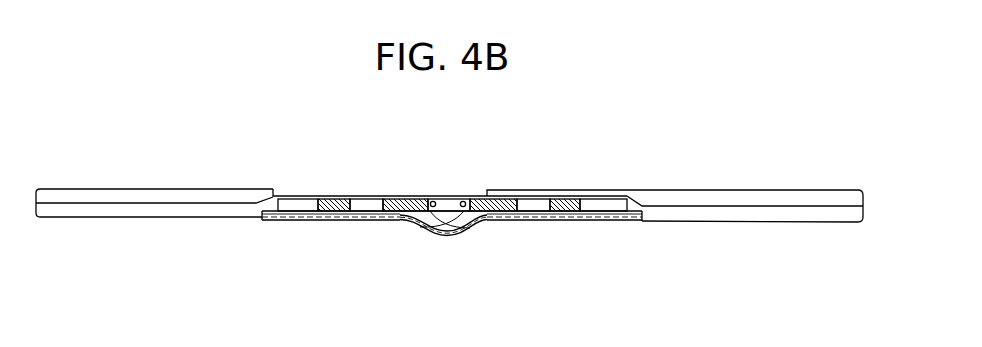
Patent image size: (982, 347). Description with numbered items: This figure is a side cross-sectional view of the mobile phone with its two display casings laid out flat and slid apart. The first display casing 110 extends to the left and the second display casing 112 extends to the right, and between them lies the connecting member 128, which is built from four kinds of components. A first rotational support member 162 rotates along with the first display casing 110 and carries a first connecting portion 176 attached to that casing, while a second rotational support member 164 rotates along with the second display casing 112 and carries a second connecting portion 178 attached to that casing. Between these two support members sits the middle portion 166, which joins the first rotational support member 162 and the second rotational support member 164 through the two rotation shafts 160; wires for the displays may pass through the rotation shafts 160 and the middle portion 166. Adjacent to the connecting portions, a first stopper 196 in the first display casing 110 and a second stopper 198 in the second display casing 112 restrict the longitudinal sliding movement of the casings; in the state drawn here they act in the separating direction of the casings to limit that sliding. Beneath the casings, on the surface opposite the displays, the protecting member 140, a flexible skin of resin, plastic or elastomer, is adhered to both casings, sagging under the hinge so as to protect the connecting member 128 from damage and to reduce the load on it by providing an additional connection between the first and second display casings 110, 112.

The first display casing 110 is at (135, 190).
The second display casing 112 is at (793, 192).
The connecting member 128 is at (572, 130).
The protecting member 140 is at (467, 234).
The rotation shafts 160 is at (437, 213).
The first rotational support member 162 is at (414, 199).
The second rotational support member 164 is at (505, 196).
The middle portion 166 is at (450, 199).
The first connecting portion 176 is at (335, 211).
The second connecting portion 178 is at (567, 218).
The first stopper 196 is at (368, 211).
The second stopper 198 is at (530, 215).